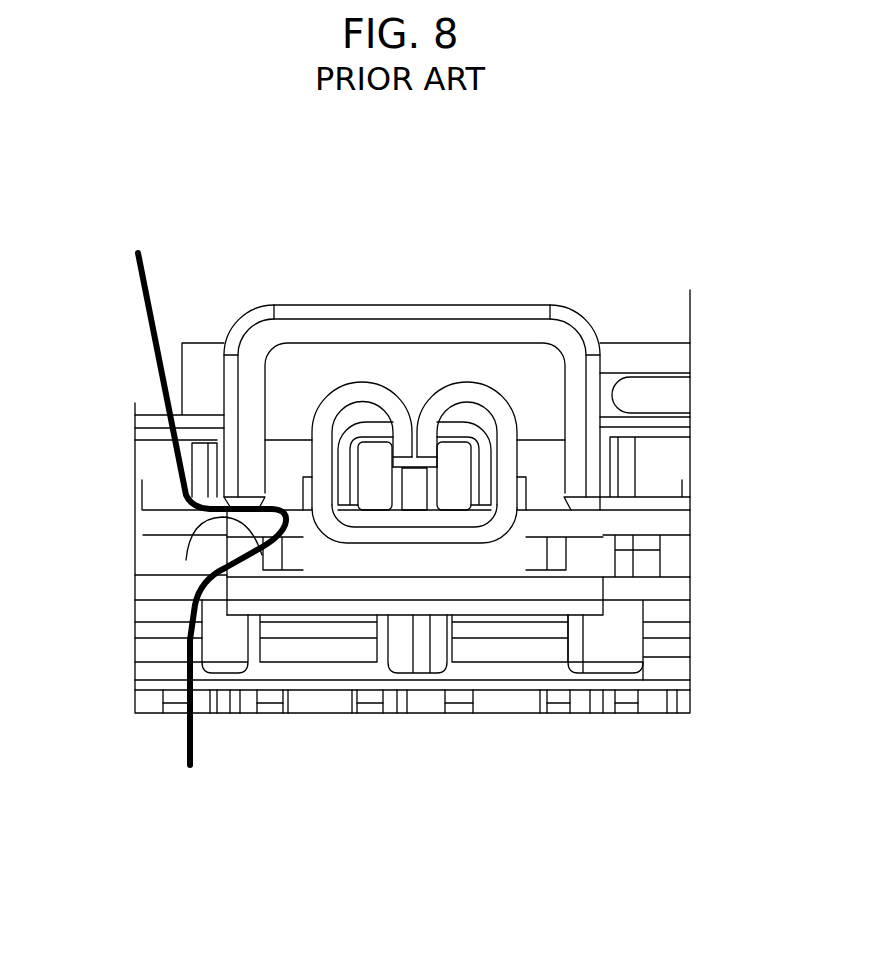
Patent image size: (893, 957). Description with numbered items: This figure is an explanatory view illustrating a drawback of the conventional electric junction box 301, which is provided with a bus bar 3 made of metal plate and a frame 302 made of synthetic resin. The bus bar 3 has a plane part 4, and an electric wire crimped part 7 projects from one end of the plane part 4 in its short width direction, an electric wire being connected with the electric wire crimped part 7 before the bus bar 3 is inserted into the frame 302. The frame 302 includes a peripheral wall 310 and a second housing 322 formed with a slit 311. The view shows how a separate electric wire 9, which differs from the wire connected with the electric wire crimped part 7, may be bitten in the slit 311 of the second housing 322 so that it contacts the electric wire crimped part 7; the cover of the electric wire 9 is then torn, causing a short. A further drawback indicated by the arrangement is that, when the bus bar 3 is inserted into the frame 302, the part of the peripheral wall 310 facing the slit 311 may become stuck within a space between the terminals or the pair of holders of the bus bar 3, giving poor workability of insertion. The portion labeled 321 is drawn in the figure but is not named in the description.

The electric junction box 301 is at (746, 200).
The frame 302 is at (590, 284).
The peripheral wall 310 is at (528, 305).
The electric wire crimped part 7 is at (528, 418).
The electric wire 9 is at (150, 290).
The plane part 4 is at (148, 522).
The bus bar 3 is at (675, 536).
The slit 311 is at (173, 556).
The second housing 322 is at (474, 624).
The base portion 321 is at (157, 607).